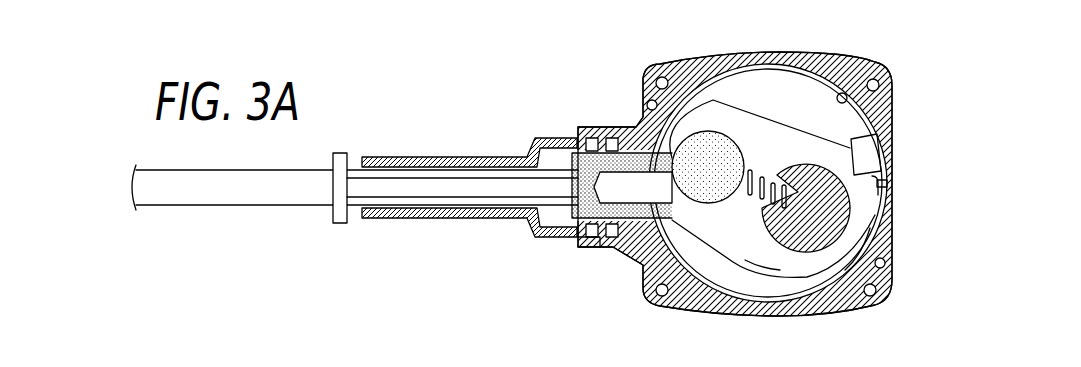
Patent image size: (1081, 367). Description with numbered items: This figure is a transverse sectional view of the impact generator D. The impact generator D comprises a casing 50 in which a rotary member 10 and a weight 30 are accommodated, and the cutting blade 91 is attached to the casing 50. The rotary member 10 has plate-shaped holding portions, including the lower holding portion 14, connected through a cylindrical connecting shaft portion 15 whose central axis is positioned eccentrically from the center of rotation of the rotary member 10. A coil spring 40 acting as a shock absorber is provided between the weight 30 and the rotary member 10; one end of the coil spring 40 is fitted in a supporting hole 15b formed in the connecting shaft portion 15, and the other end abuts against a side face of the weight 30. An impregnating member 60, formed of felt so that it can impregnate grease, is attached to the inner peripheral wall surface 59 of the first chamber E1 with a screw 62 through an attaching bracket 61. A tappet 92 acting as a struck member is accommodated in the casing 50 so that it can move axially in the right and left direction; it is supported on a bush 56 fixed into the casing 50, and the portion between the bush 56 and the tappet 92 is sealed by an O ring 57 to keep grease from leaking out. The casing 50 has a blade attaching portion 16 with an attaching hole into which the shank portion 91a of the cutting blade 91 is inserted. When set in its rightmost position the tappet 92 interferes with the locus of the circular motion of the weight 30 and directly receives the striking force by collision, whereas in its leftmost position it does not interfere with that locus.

The rotary member 10 is at (903, 210).
The lower plate-shaped holding portion 14 is at (858, 237).
The connecting shaft portion 15 is at (868, 208).
The supporting hole 15b is at (893, 287).
The blade attaching portion 16 is at (423, 218).
The weight 30 is at (720, 148).
The coil spring 40 is at (760, 200).
The casing 50 is at (640, 263).
The bush 56 is at (610, 250).
The O ring 57 is at (612, 128).
The inner peripheral wall surface 59 is at (860, 62).
The impregnating member 60 is at (895, 130).
The attaching bracket 61 is at (902, 148).
The screw 62 is at (902, 170).
The cutting blade 91 is at (307, 226).
The shank portion 91a is at (387, 182).
The tappet 92 is at (556, 232).
The first chamber E1 is at (780, 287).
The impact generator D is at (463, 339).